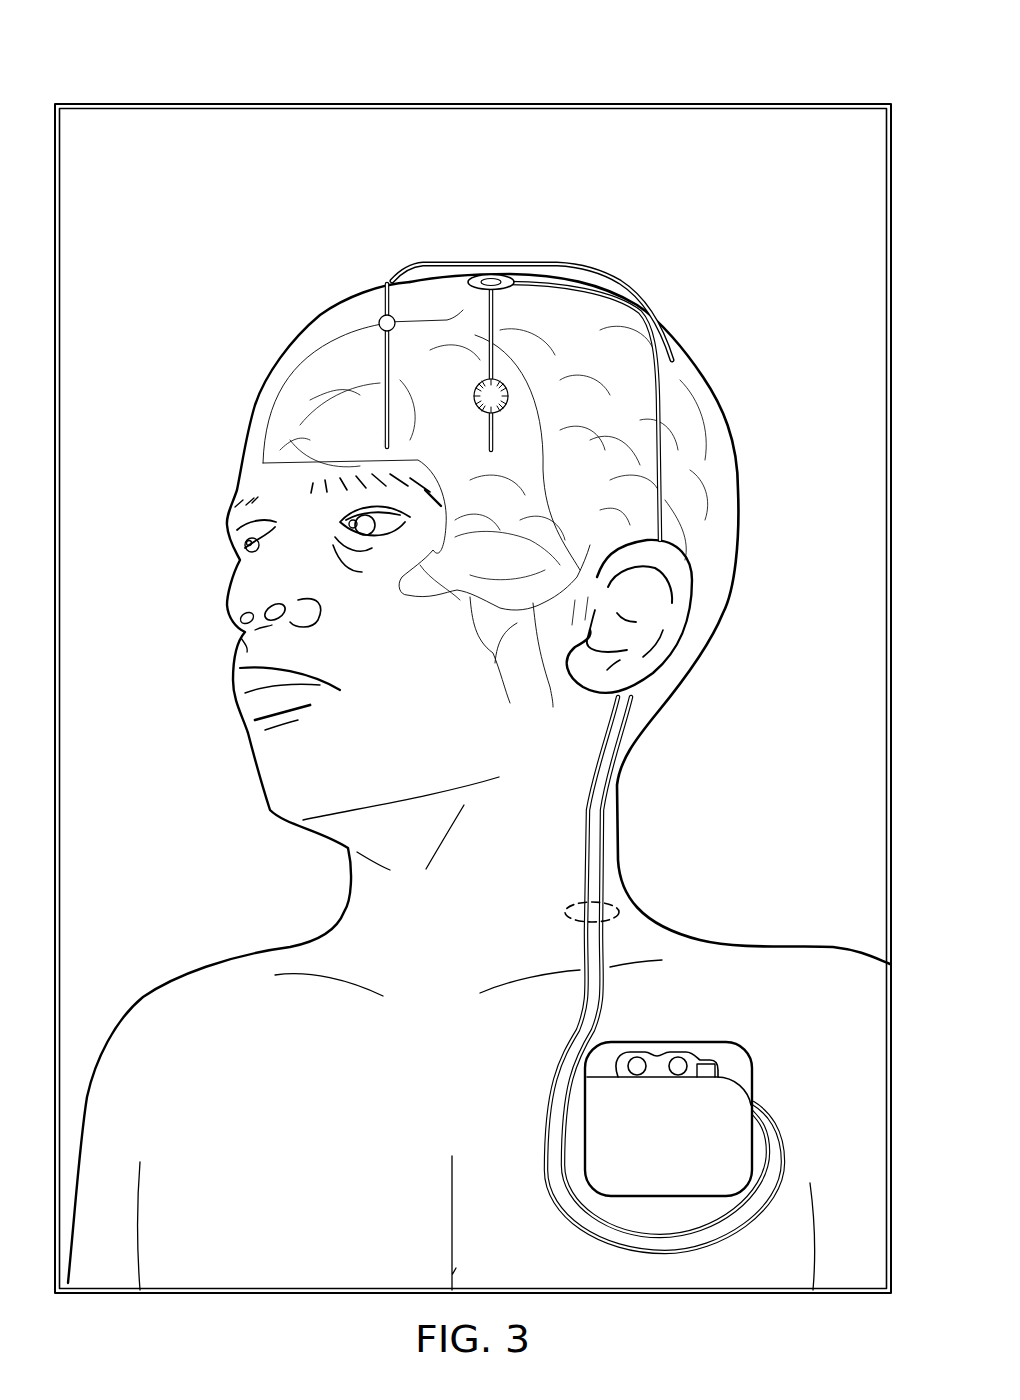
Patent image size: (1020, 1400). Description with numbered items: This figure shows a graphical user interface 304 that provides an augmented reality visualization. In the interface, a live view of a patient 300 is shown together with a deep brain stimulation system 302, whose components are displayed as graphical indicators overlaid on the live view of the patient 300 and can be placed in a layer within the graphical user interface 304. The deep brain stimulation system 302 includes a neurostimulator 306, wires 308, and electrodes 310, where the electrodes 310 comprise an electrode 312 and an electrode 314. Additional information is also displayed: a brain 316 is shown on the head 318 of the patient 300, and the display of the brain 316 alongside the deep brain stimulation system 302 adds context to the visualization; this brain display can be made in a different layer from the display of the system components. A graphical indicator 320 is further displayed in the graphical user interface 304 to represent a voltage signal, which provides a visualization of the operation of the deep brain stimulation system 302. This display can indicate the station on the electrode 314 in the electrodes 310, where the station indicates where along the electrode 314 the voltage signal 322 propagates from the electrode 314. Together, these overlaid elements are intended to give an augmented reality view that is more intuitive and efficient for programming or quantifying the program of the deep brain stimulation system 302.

The patient 300 is at (242, 432).
The deep brain stimulation system 302 is at (766, 546).
The graphical user interface 304 is at (343, 68).
The neurostimulator 306 is at (668, 1042).
The wires 308 is at (620, 912).
The electrodes 310 is at (374, 447).
The electrode 312 is at (385, 398).
The electrode 314 is at (493, 334).
The brain 316 is at (722, 447).
The head 318 is at (357, 297).
The graphical indicator 320 is at (488, 418).
The voltage signal 322 is at (475, 390).